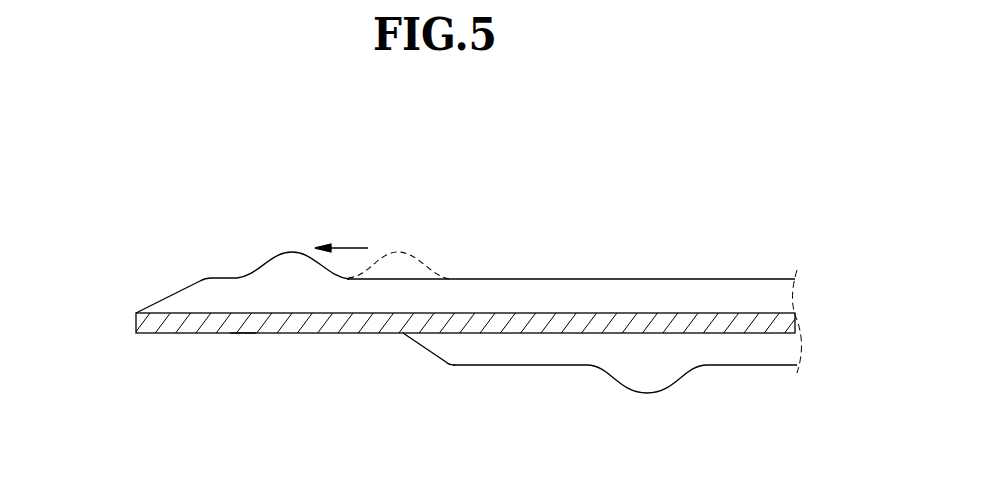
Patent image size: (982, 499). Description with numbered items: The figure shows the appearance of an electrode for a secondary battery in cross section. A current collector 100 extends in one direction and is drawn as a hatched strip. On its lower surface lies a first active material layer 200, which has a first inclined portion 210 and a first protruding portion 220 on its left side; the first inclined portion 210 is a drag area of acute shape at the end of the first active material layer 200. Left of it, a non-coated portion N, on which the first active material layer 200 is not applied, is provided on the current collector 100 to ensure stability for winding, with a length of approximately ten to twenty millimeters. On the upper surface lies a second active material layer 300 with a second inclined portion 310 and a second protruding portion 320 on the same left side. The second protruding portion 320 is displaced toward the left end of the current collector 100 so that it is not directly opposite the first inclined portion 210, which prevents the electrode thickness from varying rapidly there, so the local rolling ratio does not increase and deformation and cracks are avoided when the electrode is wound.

The current collector 100 is at (136, 323).
The first active material layer 200 is at (610, 397).
The first inclined portion 210 is at (448, 367).
The first protruding portion 220 is at (647, 395).
The second active material layer 300 is at (462, 249).
The second inclined portion 310 is at (202, 282).
The second protruding portion 320 is at (292, 250).
The non-coated portion N is at (242, 337).